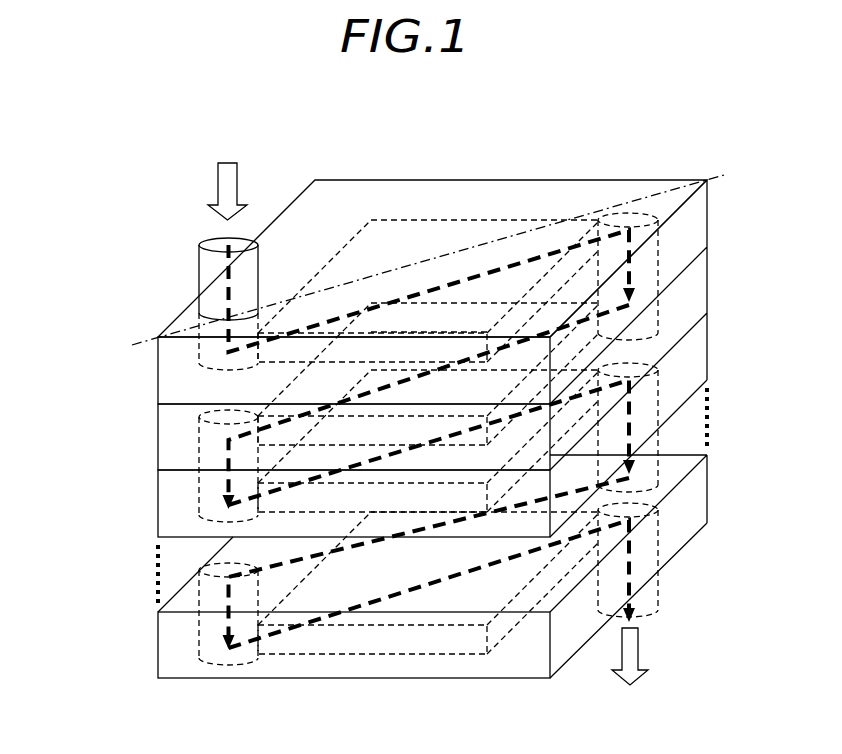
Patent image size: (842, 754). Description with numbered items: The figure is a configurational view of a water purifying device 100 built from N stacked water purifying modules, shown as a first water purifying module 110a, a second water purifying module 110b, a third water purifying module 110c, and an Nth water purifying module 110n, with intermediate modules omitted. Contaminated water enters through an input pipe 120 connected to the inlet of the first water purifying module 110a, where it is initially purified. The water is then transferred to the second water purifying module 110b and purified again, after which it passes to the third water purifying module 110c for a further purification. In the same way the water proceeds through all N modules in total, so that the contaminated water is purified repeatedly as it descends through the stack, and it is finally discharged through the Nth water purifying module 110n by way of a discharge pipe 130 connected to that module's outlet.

The water purifying device 100 is at (110, 170).
The first water purifying module 110a is at (158, 362).
The second water purifying module 110b is at (158, 433).
The third water purifying module 110c is at (158, 500).
The Nth water purifying module 110n is at (158, 637).
The input pipe 120 is at (199, 268).
The discharge pipe 130 is at (658, 600).